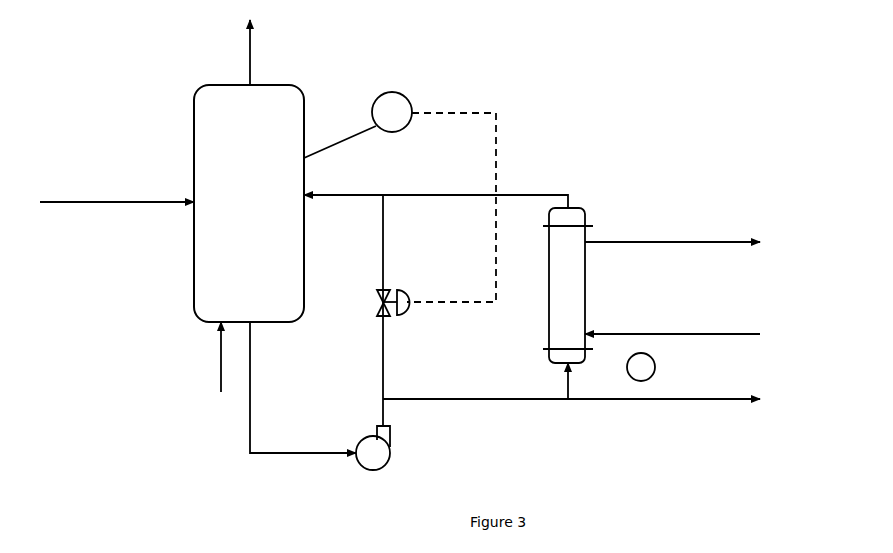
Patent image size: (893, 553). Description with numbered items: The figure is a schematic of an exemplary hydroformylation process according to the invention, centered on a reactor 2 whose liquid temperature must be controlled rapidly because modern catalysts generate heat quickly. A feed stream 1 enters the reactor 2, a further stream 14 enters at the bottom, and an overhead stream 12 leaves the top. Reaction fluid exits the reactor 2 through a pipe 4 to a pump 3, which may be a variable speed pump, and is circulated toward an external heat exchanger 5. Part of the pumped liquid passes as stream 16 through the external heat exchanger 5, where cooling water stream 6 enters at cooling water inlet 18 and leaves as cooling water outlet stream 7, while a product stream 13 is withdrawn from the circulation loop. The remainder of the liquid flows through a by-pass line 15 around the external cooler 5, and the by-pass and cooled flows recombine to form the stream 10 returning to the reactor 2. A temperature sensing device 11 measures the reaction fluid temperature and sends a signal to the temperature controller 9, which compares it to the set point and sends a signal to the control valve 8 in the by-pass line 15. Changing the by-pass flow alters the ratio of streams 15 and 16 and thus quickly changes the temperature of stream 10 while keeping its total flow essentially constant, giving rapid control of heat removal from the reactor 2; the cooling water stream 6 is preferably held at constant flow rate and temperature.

The feed stream 1 is at (117, 216).
The reactor 2 is at (249, 203).
The pump 3 is at (373, 461).
The pipe 4 is at (303, 387).
The external heat exchanger 5 is at (560, 285).
The cooling water stream 6 is at (672, 347).
The cooling water outlet stream 7 is at (672, 257).
The control valve 8 is at (394, 312).
The temperature controller 9 is at (434, 197).
The stream 10 is at (343, 206).
The temperature sensing device 11 is at (340, 149).
The overhead vapor stream 12 is at (265, 52).
The product stream 13 is at (587, 389).
The inlet stream 14 is at (218, 369).
The by-pass line 15 is at (396, 310).
The stream 16 is at (475, 205).
The cooling water inlet 18 is at (608, 334).